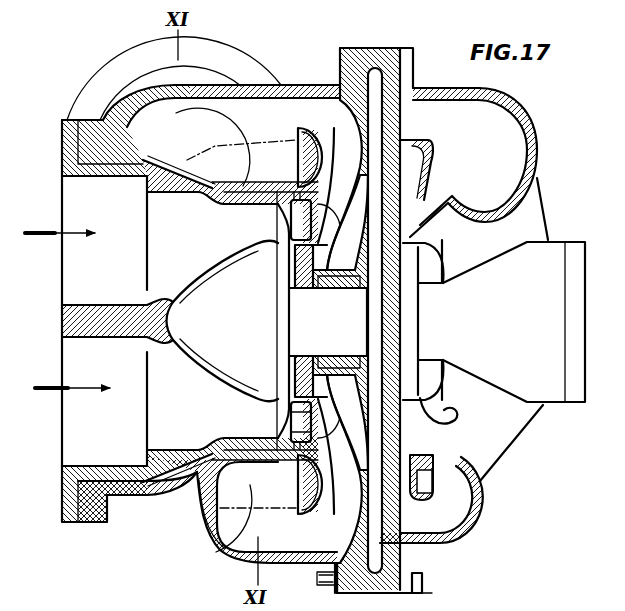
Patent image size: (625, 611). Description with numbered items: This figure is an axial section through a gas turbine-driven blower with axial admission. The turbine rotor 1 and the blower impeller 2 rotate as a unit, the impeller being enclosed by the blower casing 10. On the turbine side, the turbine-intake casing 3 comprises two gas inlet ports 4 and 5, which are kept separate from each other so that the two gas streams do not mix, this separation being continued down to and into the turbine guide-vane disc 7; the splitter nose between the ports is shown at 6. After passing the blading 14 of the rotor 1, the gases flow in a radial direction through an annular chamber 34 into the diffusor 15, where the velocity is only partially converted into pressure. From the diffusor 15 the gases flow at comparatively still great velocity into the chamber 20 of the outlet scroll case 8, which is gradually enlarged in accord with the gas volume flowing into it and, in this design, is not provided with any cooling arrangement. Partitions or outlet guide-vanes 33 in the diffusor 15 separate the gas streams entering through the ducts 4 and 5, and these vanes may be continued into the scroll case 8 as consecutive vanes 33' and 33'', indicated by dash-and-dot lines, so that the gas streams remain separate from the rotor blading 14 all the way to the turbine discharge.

The turbine rotor 1 is at (300, 327).
The blower impeller 2 is at (421, 307).
The turbine-intake casing 3 is at (68, 318).
The gas inlet port 4 is at (72, 362).
The gas inlet port 5 is at (72, 261).
The upper splitter wall 6 is at (225, 272).
The turbine guide-vane disc 7 is at (282, 376).
The outlet scroll case 8 is at (229, 543).
The blower casing 10 is at (538, 150).
The blading 14 is at (300, 443).
The diffusor 15 is at (330, 147).
The chamber 20 is at (262, 103).
The outlet guide-vanes 33 is at (270, 422).
The consecutive vane 33' is at (230, 518).
The consecutive vane 33'' is at (236, 147).
The annular chamber 34 is at (318, 220).